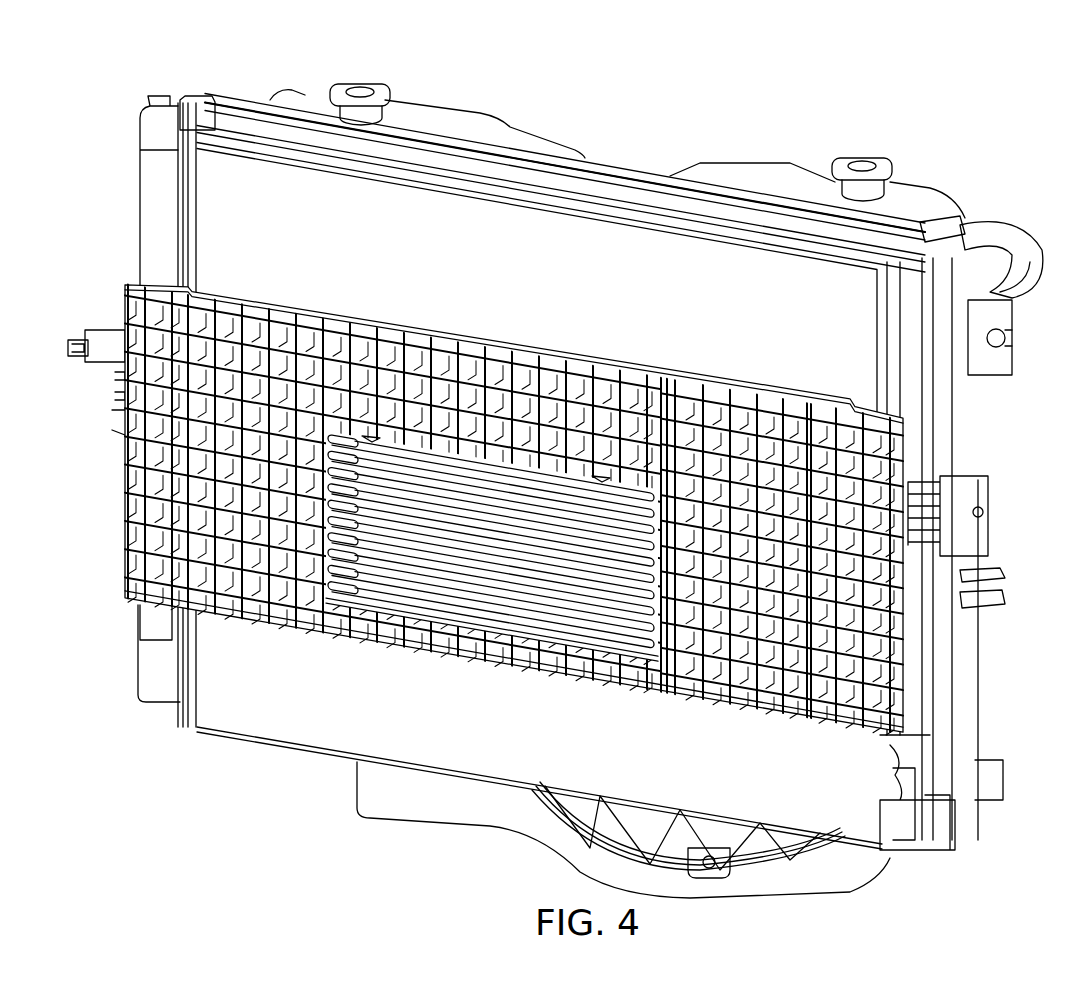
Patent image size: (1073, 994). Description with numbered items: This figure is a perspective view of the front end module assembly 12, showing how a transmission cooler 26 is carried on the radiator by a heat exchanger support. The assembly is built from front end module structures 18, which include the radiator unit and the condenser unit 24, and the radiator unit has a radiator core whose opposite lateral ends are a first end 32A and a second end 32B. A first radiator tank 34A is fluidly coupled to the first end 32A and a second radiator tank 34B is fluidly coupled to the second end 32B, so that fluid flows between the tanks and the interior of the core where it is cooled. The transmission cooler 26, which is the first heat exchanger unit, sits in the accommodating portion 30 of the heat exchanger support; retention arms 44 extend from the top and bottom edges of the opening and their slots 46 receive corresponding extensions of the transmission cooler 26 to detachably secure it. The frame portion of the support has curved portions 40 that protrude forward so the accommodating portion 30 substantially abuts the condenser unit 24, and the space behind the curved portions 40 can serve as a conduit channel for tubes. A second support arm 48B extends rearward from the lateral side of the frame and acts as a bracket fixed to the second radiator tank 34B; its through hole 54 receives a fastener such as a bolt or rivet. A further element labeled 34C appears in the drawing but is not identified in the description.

The front end module assembly 12 is at (554, 455).
The front end module structure 18 is at (554, 455).
The condenser unit 24 is at (554, 486).
The transmission cooler 26 is at (492, 493).
The accommodating portion 30 is at (567, 600).
The first end 32A is at (177, 132).
The second end 32B is at (913, 273).
The first radiator tank 34A is at (157, 228).
The second radiator tank 34B is at (947, 335).
The third side bracket 34C is at (125, 580).
The curved portions 40 is at (514, 490).
The retention arms 44 is at (167, 285).
The slots 46 is at (368, 440).
The second support arm 48B is at (983, 476).
The through hole 54 is at (976, 520).